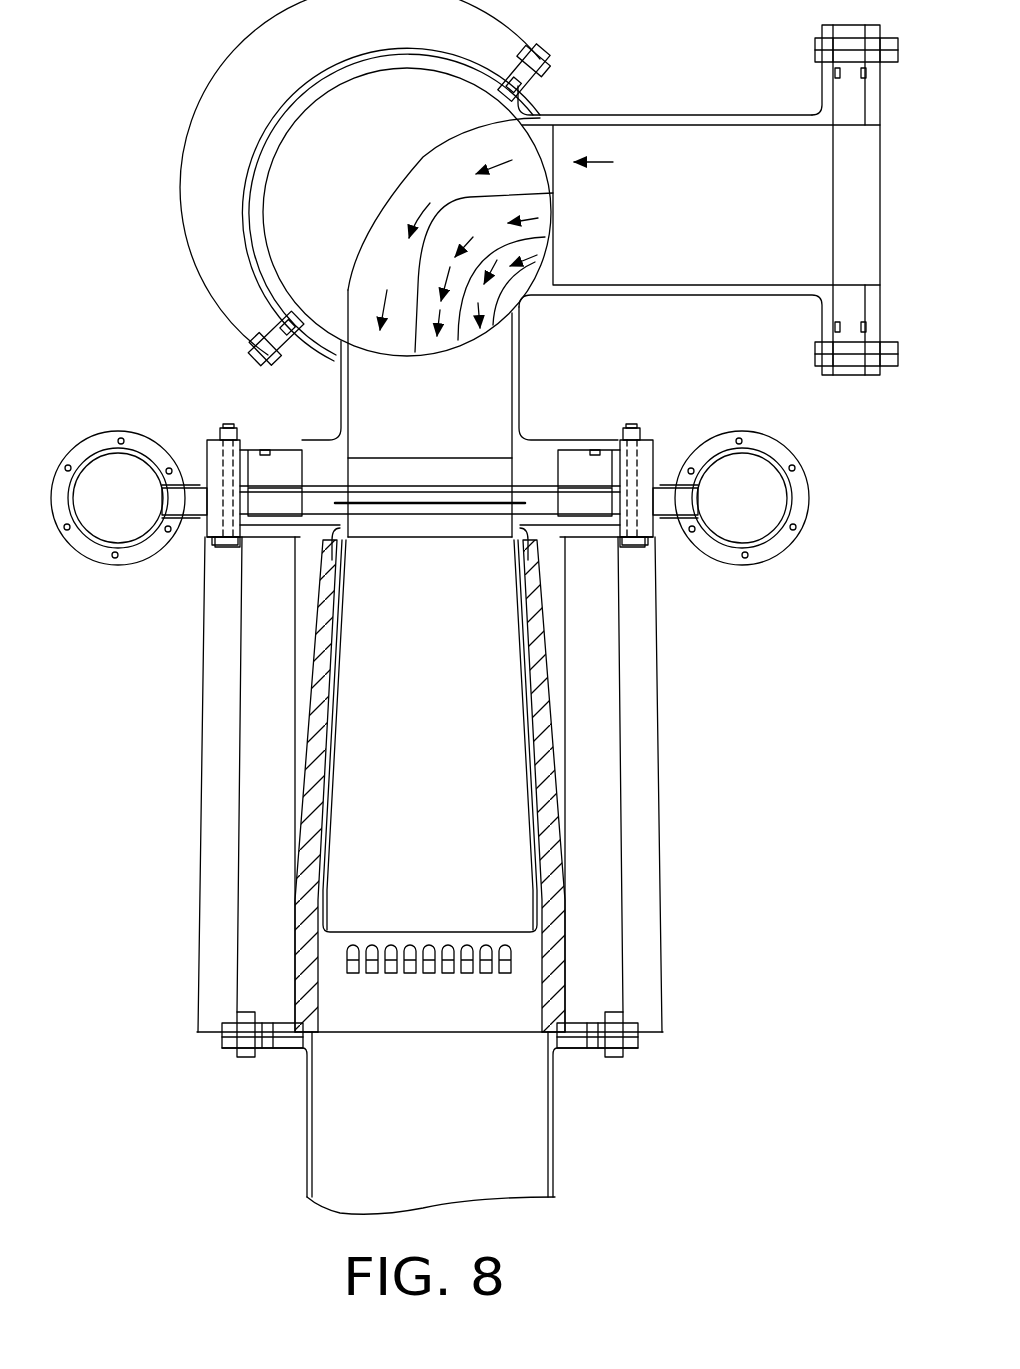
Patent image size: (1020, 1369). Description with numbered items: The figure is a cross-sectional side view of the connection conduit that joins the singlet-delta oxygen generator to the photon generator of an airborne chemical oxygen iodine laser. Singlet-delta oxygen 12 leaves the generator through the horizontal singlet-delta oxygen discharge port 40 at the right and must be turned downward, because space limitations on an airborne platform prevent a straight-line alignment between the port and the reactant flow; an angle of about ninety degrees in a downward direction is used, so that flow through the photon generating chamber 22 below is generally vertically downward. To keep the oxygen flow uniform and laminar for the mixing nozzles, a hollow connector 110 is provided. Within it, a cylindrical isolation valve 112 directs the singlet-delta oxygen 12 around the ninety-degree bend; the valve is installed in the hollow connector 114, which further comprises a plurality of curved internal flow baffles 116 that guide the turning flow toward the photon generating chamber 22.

The singlet-delta oxygen 12 is at (497, 165).
The photon generating chamber 22 is at (552, 700).
The singlet-delta oxygen discharge port 40 is at (850, 201).
The hollow connector 110 is at (191, 266).
The cylindrical isolation valve 112 is at (518, 33).
The hollow connector 114 is at (376, 207).
The curved internal flow baffles 116 is at (495, 250).